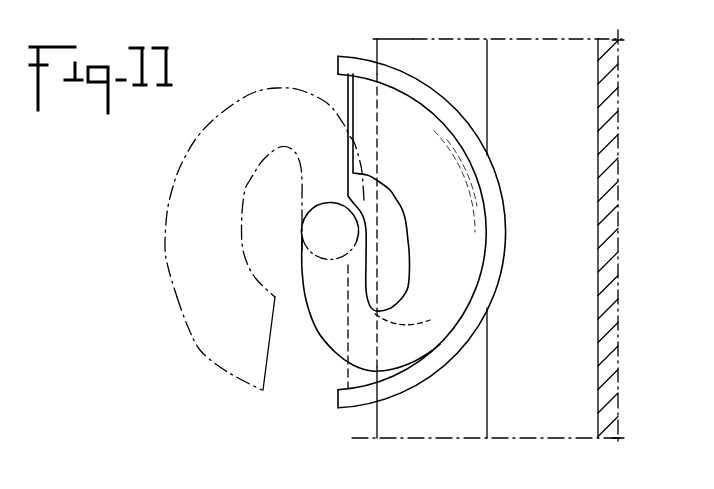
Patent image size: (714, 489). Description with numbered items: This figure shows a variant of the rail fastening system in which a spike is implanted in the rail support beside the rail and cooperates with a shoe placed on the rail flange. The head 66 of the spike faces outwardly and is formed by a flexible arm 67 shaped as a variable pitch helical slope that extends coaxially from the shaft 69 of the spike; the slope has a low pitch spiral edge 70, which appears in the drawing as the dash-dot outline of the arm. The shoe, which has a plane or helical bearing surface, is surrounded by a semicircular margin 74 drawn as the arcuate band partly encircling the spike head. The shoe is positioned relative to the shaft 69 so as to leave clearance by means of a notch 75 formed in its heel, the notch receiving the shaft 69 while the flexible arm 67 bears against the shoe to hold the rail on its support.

The head 66 is at (233, 129).
The flexible arm 67 is at (197, 299).
The shaft 69 is at (326, 210).
The low pitch spiral edge 70 is at (168, 213).
The semicircular margin 74 is at (503, 198).
The notch 75 is at (368, 212).